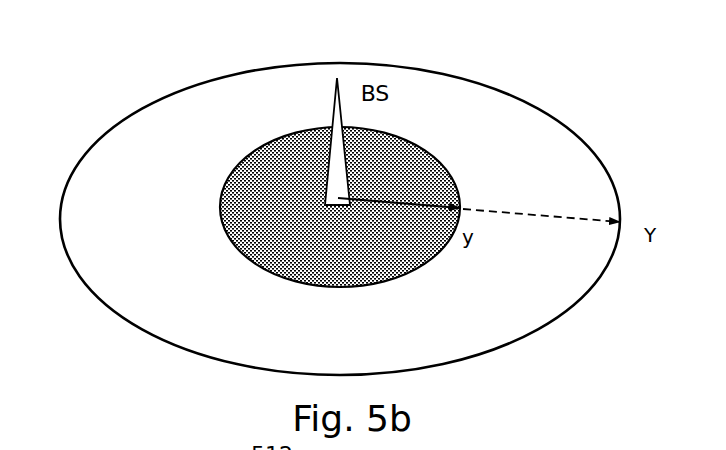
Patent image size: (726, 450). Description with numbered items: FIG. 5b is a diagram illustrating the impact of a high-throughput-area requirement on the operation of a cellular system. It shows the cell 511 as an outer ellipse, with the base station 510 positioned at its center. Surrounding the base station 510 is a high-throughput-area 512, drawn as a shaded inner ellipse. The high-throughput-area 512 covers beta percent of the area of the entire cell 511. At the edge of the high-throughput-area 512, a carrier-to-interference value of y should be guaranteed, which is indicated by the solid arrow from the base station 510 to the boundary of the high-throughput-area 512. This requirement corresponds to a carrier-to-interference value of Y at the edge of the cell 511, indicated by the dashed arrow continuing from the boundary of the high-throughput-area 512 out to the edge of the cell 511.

The base station 510 is at (333, 95).
The cell 511 is at (203, 82).
The high-throughput-area 512 is at (223, 183).